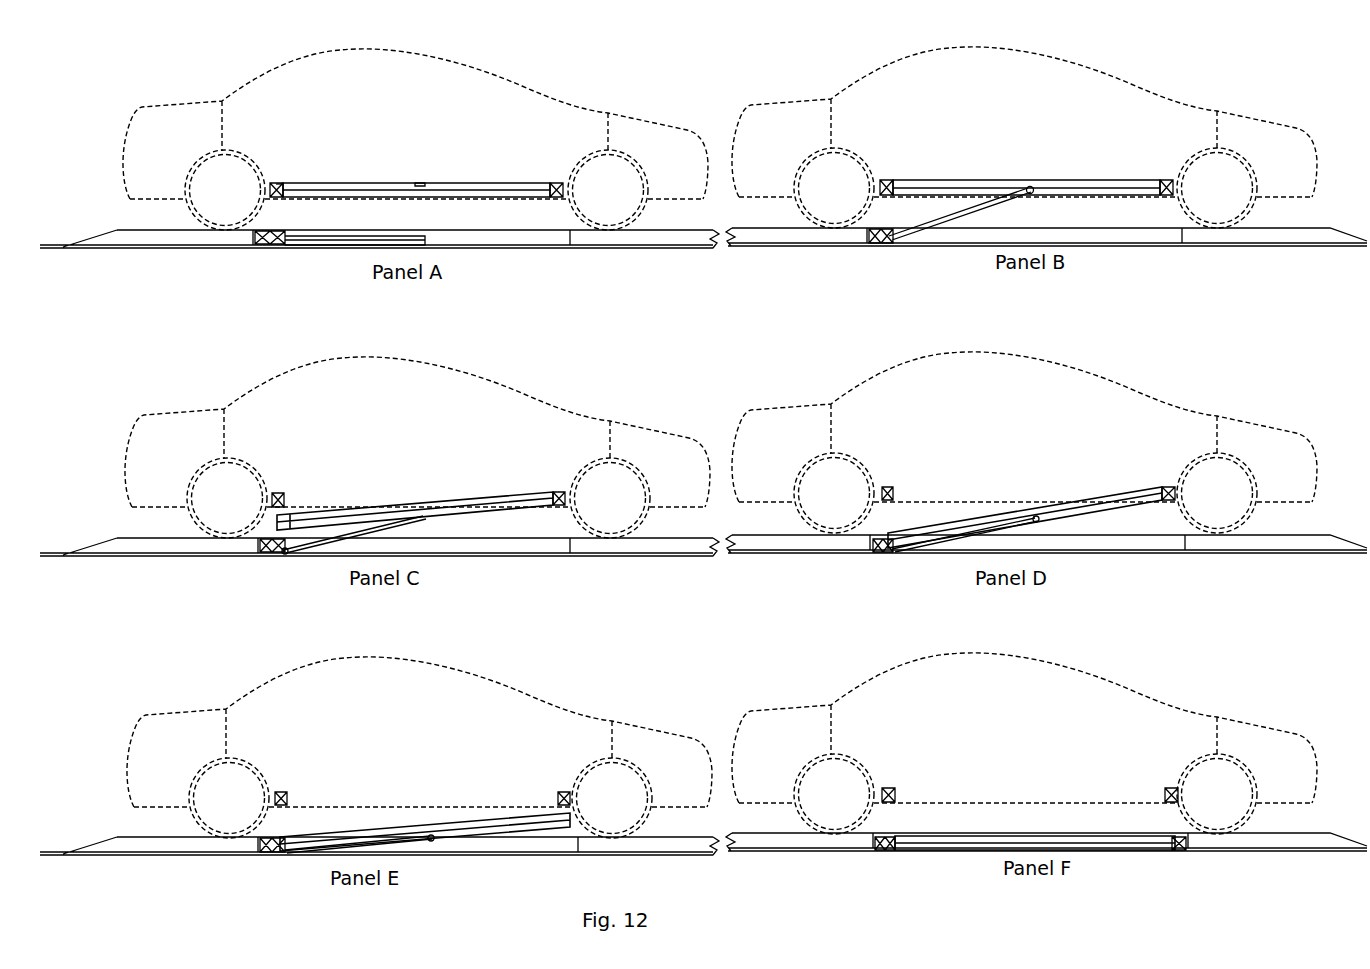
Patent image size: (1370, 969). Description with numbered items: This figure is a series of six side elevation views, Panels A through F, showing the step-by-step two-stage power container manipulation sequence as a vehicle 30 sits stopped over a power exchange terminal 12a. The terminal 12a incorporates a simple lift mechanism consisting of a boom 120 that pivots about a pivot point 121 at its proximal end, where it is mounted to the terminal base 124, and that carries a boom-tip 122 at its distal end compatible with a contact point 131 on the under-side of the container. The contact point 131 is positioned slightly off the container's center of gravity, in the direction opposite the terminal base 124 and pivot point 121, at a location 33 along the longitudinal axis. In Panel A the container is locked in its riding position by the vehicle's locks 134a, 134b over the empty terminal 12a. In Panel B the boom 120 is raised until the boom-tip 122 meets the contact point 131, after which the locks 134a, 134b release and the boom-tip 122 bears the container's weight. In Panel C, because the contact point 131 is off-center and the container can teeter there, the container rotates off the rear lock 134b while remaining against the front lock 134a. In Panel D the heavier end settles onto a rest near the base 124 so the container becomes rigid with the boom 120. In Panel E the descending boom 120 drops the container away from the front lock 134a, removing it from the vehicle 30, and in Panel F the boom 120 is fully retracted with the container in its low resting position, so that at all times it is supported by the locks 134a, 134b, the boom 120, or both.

The vehicle 30 is at (468, 100).
The power exchange terminal 12a is at (138, 271).
The terminal base 124 is at (278, 187).
The location 33 is at (418, 183).
The contact point 131 is at (428, 184).
The front lock 134a is at (556, 200).
The rear lock 134b is at (277, 200).
The boom 120 is at (357, 259).
The boom-tip 122 is at (1032, 188).
The pivot point 121 is at (283, 555).